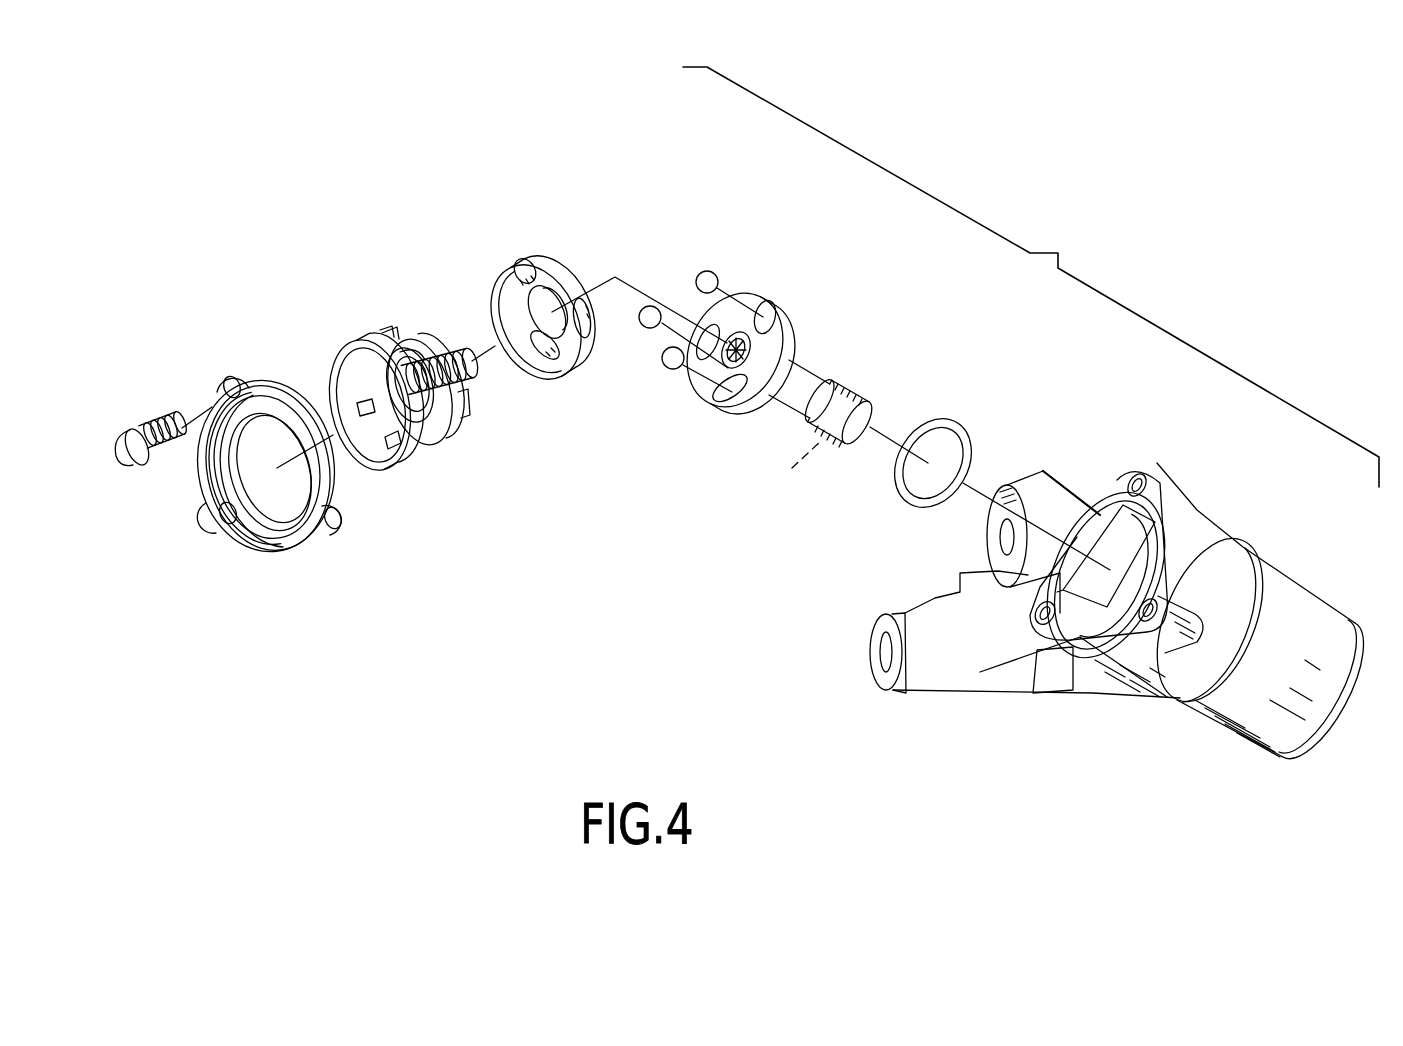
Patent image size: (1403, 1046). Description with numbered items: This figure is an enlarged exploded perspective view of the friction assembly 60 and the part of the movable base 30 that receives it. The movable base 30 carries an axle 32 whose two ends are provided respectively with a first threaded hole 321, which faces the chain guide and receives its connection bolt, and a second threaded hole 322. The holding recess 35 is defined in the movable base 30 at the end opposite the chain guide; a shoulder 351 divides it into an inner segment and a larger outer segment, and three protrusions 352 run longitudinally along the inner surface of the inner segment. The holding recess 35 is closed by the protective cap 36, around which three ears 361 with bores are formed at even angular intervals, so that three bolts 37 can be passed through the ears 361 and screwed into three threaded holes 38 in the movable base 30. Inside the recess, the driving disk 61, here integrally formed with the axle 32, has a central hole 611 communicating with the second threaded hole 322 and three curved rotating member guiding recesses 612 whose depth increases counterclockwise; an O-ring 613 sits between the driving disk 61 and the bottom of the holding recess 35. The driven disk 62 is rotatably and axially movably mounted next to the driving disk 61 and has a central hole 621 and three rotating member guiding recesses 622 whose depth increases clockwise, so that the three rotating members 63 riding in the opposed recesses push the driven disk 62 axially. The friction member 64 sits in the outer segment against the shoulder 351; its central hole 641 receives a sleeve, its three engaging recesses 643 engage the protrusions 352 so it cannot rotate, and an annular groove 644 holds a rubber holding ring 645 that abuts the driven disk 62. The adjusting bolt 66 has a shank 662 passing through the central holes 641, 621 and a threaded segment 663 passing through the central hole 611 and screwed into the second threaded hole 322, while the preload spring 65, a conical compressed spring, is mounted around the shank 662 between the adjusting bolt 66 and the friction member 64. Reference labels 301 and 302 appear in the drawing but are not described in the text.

The movable base 30 is at (1079, 602).
The first mounting boss 301 is at (1022, 490).
The second mounting boss 302 is at (893, 680).
The axle 32 is at (835, 417).
The first threaded hole 321 is at (783, 463).
The second threaded hole 322 is at (730, 390).
The holding recess 35 is at (1158, 558).
The shoulder 351 is at (1130, 557).
The protrusions 352 is at (1087, 613).
The protective cap 36 is at (262, 494).
The ears 361 is at (226, 520).
The bolts 37 is at (160, 422).
The threaded holes 38 is at (1142, 478).
The friction assembly 60 is at (917, 318).
The driving disk 61 is at (768, 346).
The central hole 611 is at (740, 330).
The rotating member guiding recesses 612 is at (766, 327).
The O-ring 613 is at (905, 500).
The driven disk 62 is at (552, 290).
The central hole 621 is at (562, 332).
The rotating member guiding recesses 622 is at (528, 266).
The rotating members 63 is at (712, 270).
The friction member 64 is at (400, 396).
The central hole 641 is at (408, 358).
The engaging recesses 643 is at (463, 418).
The annular groove 644 is at (392, 343).
The holding ring 645 is at (423, 423).
The preload spring 65 is at (352, 403).
The adjusting bolt 66 is at (337, 377).
The shank 662 is at (430, 413).
The threaded segment 663 is at (452, 350).